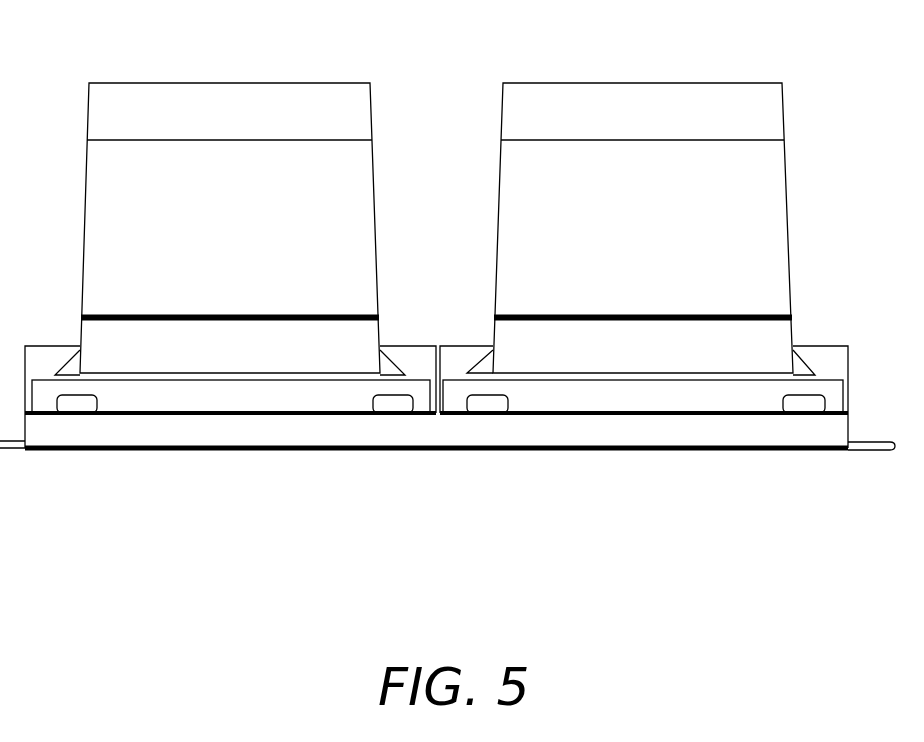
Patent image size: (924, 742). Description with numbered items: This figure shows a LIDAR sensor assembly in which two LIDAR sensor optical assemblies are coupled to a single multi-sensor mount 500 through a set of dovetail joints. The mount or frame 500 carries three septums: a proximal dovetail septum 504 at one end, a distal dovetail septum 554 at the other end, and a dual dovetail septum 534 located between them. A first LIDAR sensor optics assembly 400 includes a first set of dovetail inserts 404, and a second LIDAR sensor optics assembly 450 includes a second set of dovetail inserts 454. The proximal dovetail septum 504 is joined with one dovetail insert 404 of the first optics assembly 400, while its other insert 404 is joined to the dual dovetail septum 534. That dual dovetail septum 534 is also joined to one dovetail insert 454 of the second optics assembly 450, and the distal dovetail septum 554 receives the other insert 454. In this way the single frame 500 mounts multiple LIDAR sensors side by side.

The first LIDAR sensor optics assembly 400 is at (230, 196).
The first set of dovetail inserts 404 is at (375, 360).
The second LIDAR sensor optics assembly 450 is at (641, 196).
The second set of dovetail inserts 454 is at (790, 360).
The multi-sensor mount 500 is at (828, 477).
The proximal dovetail septum 504 is at (62, 342).
The dual dovetail septum 534 is at (487, 322).
The distal dovetail septum 554 is at (822, 338).